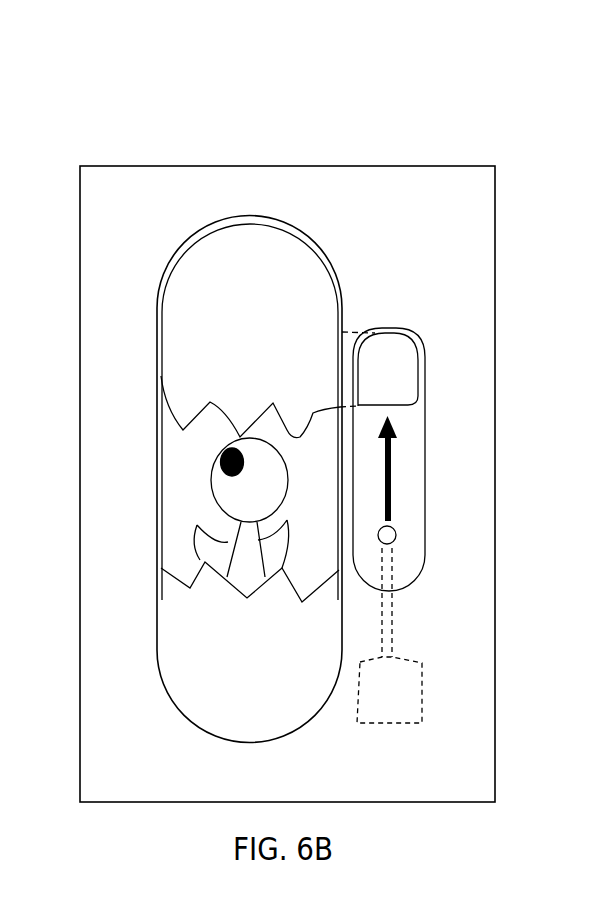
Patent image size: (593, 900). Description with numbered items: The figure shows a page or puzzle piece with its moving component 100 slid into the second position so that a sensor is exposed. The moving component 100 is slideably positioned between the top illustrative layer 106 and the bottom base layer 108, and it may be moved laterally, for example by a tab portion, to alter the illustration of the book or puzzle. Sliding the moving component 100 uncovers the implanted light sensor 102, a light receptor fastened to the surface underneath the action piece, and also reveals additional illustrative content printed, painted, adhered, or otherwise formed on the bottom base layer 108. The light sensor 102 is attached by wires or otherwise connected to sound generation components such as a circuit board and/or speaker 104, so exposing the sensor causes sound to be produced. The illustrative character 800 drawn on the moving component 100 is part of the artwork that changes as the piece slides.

The moving component 100 is at (308, 310).
The light sensor 102 is at (395, 539).
The circuit board and/or speaker 104 is at (392, 697).
The top illustrative layer 106 is at (132, 197).
The bottom base layer 108 is at (173, 532).
The character indicator 800 is at (211, 458).